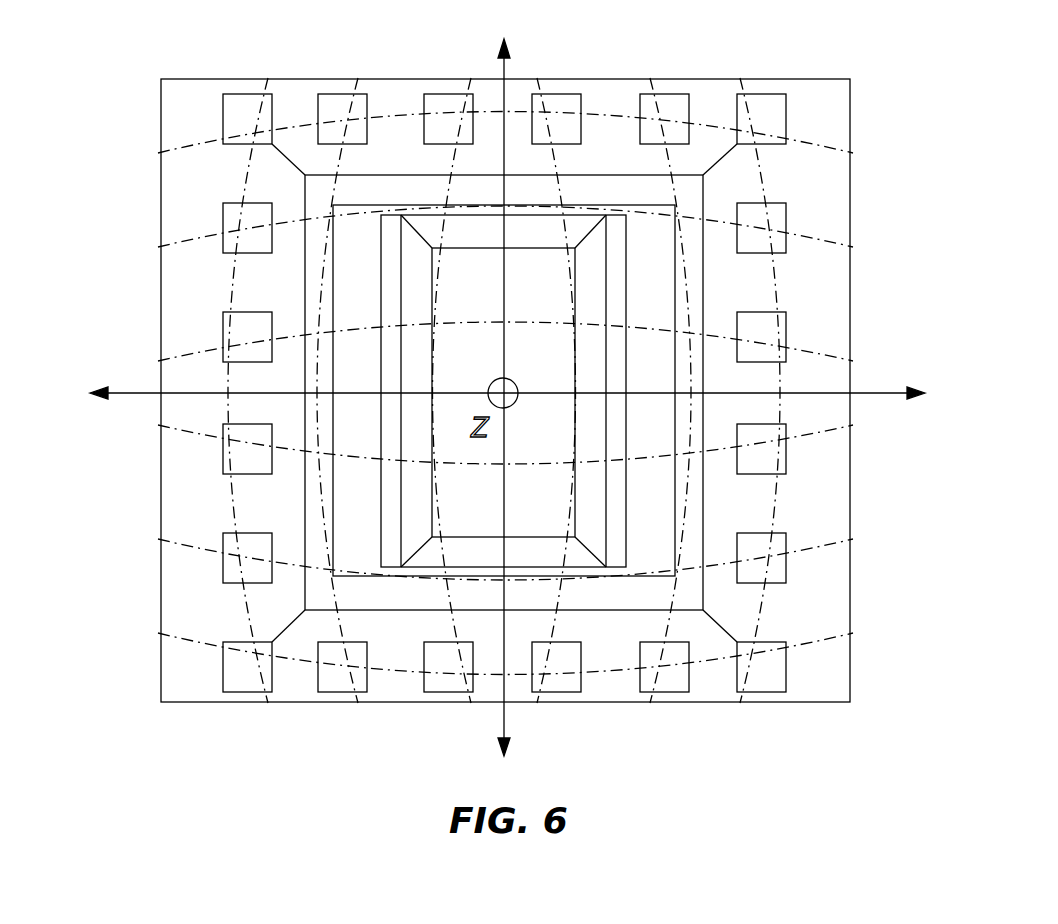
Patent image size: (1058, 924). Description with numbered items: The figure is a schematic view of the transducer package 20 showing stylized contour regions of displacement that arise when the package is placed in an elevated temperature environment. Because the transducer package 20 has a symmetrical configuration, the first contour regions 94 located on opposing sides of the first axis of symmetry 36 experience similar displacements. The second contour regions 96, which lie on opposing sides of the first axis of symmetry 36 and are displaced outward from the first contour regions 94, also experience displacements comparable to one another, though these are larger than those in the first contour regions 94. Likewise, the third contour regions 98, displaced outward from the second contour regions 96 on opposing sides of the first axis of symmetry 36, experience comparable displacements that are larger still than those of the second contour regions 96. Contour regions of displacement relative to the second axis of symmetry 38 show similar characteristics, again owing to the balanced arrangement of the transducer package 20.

The transducer package 20 is at (746, 775).
The first axis of symmetry 36 is at (118, 390).
The second axis of symmetry 38 is at (504, 63).
The first contour regions 94 is at (835, 375).
The second contour regions 96 is at (835, 293).
The third contour regions 98 is at (835, 200).